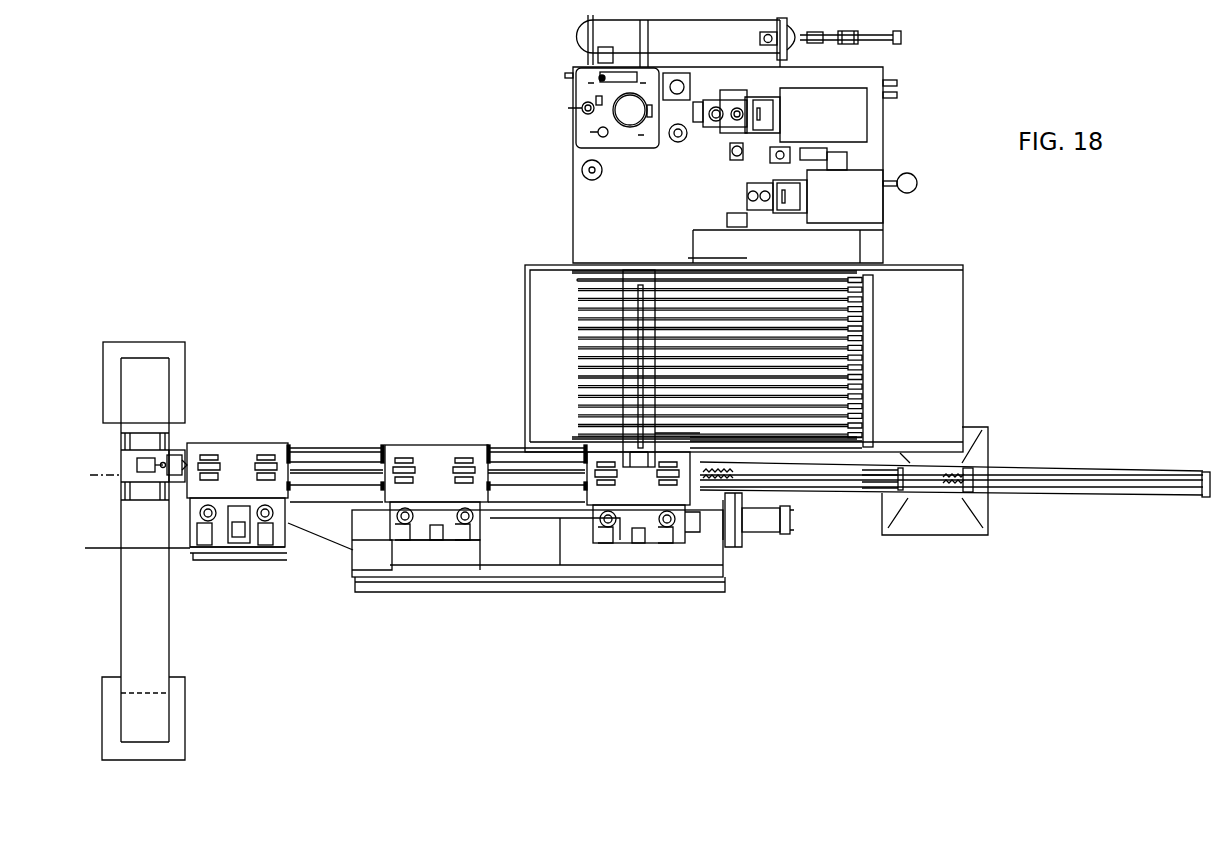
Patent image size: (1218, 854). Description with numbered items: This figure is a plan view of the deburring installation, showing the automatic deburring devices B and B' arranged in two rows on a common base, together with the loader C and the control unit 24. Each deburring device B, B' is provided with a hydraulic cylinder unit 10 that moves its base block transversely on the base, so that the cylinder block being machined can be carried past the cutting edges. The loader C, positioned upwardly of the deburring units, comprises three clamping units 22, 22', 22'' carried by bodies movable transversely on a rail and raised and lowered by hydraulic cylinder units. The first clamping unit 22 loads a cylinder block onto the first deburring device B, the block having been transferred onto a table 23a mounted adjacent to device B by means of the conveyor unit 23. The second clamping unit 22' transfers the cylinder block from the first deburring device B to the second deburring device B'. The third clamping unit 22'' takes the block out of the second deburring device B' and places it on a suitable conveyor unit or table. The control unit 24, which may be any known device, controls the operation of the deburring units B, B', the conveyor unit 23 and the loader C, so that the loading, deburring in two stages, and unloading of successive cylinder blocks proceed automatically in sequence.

The hydraulic cylinder unit 10 is at (770, 560).
The clamping unit 22 is at (237, 522).
The second clamping unit 22' is at (436, 538).
The third clamping unit 22'' is at (638, 545).
The conveyor unit 23 is at (135, 551).
The table 23a is at (188, 557).
The control unit 24 is at (582, 133).
The automatic deburring device B is at (444, 565).
The second automatic deburring device B' is at (646, 566).
The loader C is at (343, 424).